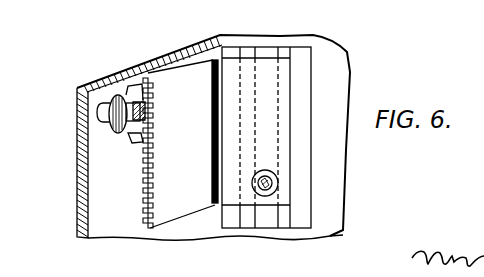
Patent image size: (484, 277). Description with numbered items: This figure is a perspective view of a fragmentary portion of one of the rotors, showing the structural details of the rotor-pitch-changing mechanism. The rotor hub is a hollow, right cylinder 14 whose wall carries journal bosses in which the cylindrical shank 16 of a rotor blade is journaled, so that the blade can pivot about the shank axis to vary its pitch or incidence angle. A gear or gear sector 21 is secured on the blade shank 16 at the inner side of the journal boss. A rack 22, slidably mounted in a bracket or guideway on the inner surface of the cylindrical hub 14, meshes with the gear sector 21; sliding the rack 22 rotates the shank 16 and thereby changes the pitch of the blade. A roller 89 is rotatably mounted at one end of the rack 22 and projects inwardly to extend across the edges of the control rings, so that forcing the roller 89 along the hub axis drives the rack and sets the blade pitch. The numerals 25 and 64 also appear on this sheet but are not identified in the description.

The hollow right cylinder 14 is at (77, 148).
The cylindrical shank 16 is at (120, 98).
The gear sector 21 is at (133, 138).
The rack 22 is at (145, 183).
The panel 25 is at (260, 217).
The roller 89 is at (278, 176).
The element 64 is at (483, 60).